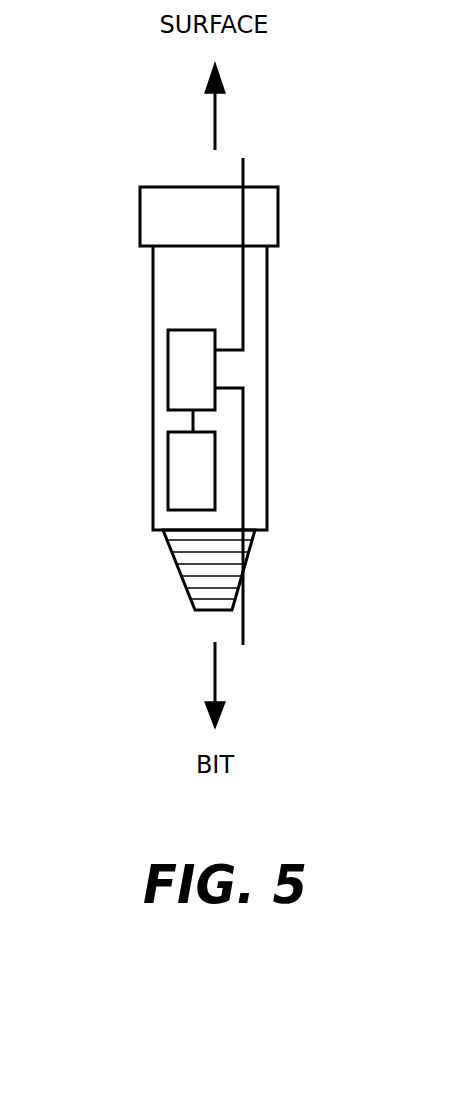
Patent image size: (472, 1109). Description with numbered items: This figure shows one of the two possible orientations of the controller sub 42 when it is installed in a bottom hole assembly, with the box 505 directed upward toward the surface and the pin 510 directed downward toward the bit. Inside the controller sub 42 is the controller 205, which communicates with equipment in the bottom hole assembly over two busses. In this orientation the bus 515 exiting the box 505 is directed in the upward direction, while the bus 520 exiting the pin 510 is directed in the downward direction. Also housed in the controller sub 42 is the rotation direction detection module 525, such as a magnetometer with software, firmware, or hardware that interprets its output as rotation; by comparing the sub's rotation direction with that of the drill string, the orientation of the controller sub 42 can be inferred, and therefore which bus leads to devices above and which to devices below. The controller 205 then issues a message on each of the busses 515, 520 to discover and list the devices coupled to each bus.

The box 505 is at (278, 210).
The bus 515 is at (243, 302).
The controller sub 42 is at (267, 355).
The controller 205 is at (168, 370).
The rotation direction detection module 525 is at (168, 472).
The bus 520 is at (243, 472).
The pin 510 is at (181, 573).